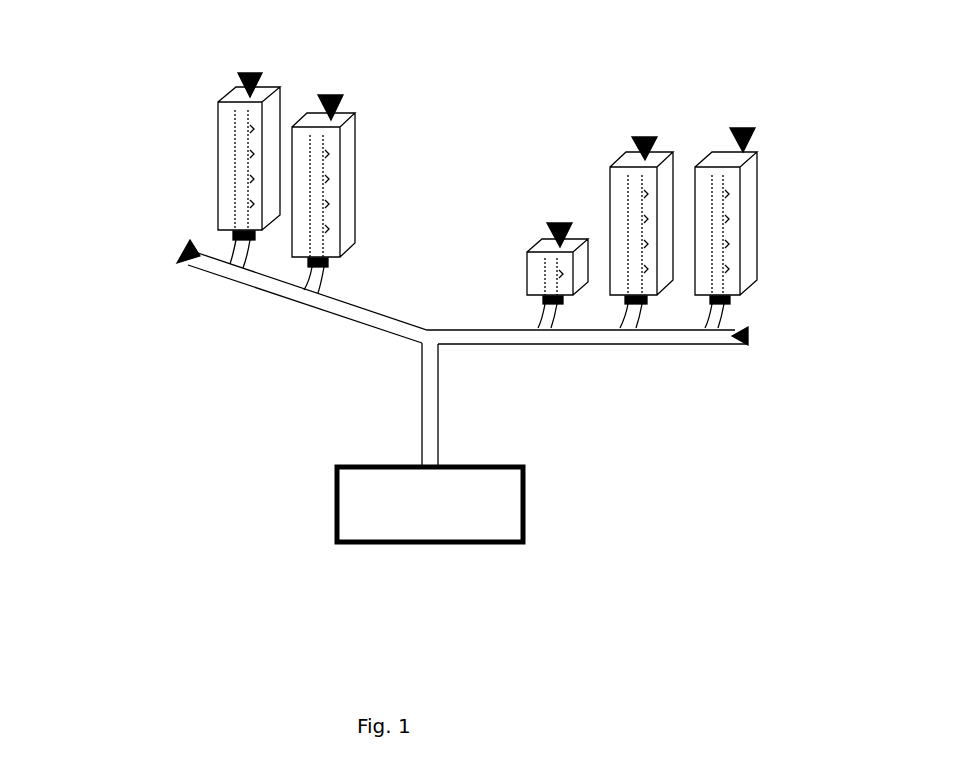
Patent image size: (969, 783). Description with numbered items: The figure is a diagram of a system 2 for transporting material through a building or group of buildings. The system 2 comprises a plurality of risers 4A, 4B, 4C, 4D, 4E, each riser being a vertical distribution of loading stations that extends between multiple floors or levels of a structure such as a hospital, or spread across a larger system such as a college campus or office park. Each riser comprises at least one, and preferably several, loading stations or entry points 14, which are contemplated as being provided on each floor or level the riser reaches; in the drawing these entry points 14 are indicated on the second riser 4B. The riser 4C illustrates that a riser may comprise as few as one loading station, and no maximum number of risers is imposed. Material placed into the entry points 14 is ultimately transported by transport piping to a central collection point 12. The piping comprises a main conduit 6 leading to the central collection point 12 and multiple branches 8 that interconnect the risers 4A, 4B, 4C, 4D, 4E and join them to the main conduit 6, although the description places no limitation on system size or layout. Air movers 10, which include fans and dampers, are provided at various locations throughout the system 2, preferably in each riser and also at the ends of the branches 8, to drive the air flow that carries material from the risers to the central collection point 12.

The system 2 is at (190, 472).
The riser 4A is at (222, 177).
The riser 4B is at (302, 102).
The riser 4C is at (532, 235).
The riser 4D is at (615, 153).
The riser 4E is at (713, 148).
The main conduit 6 is at (420, 445).
The branches 8 is at (267, 292).
The air movers 10 is at (237, 75).
The central collection point 12 is at (430, 504).
The entry points 14 is at (338, 219).